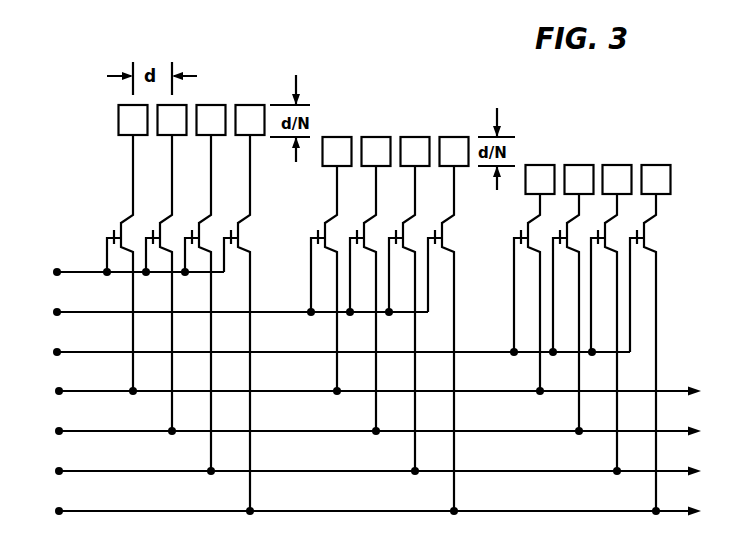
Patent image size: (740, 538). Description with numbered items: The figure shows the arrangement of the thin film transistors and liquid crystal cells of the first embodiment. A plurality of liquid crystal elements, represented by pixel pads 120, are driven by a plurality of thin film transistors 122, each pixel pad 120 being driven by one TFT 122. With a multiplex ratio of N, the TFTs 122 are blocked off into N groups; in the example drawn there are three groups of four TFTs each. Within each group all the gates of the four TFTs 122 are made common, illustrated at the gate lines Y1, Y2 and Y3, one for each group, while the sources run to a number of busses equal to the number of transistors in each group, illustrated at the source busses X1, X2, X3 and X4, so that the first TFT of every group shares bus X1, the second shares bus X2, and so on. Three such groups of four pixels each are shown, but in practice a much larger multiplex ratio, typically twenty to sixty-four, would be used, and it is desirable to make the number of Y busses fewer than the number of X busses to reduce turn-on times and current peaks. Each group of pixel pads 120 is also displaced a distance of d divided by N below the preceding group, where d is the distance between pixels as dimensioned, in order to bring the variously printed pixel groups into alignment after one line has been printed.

The pixel pad 120 is at (245, 104).
The thin film transistor 122 is at (238, 228).
The common gate bus Y1 is at (125, 274).
The common gate bus Y2 is at (227, 314).
The common gate bus Y3 is at (328, 354).
The source bus X1 is at (364, 393).
The source bus X2 is at (364, 433).
The source bus X3 is at (364, 473).
The source bus X4 is at (364, 513).